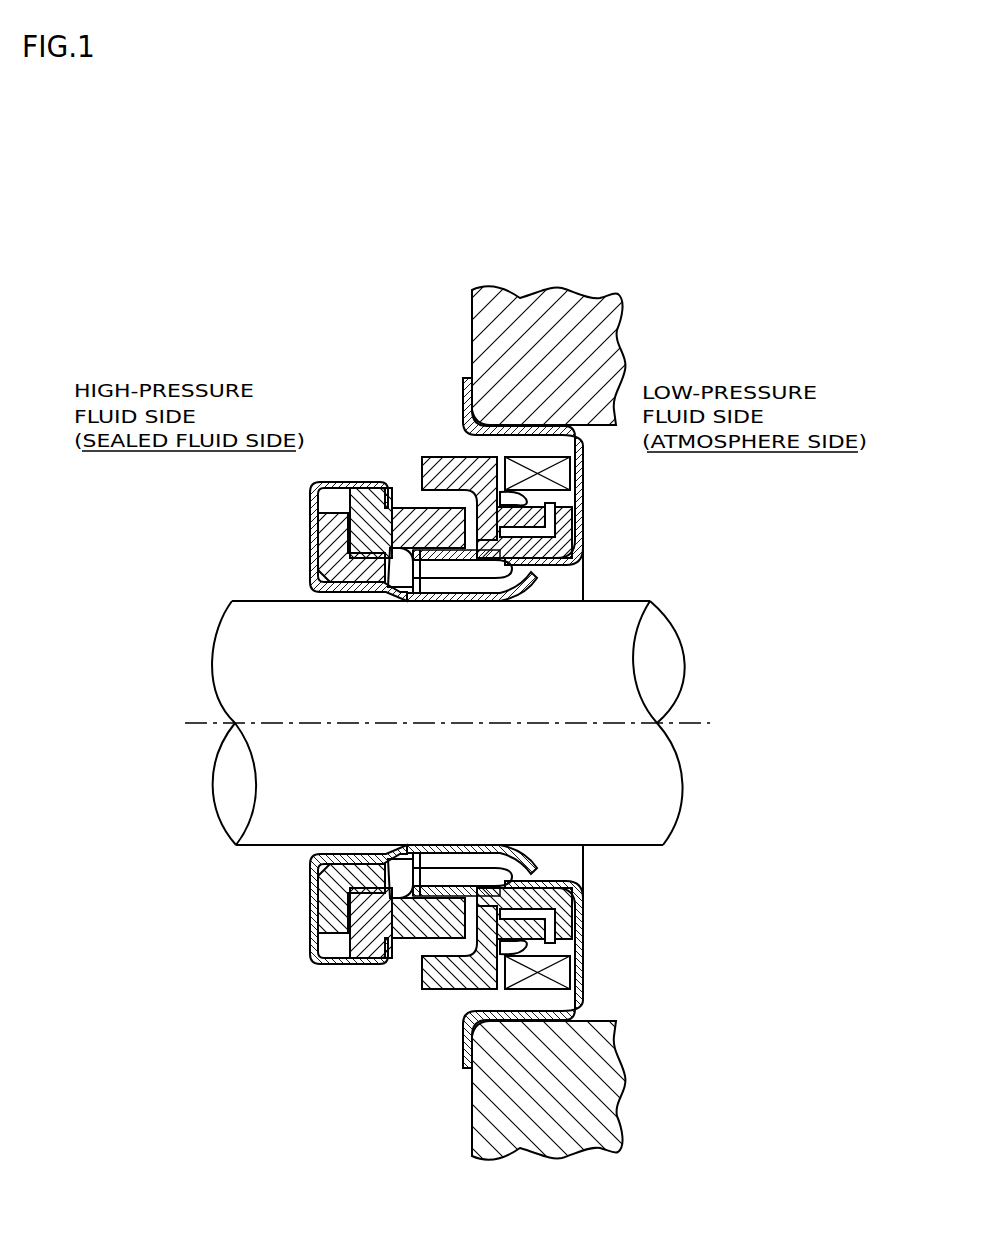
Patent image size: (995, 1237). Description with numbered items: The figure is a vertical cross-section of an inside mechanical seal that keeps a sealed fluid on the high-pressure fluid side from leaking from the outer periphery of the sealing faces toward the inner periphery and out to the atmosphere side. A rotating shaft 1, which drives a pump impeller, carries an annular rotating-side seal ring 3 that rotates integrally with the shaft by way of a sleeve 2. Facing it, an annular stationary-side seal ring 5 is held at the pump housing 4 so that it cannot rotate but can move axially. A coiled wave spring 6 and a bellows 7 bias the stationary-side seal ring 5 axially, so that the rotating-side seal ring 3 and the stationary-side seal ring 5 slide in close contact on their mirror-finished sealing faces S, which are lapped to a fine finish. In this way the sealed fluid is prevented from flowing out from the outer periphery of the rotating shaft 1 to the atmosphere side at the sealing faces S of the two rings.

The rotating shaft 1 is at (355, 693).
The sleeve 2 is at (312, 542).
The rotating-side seal ring 3 is at (352, 500).
The pump housing 4 is at (537, 312).
The stationary-side seal ring 5 is at (427, 508).
The coiled wave spring 6 is at (585, 478).
The bellows 7 is at (460, 472).
The sealing faces S is at (406, 578).